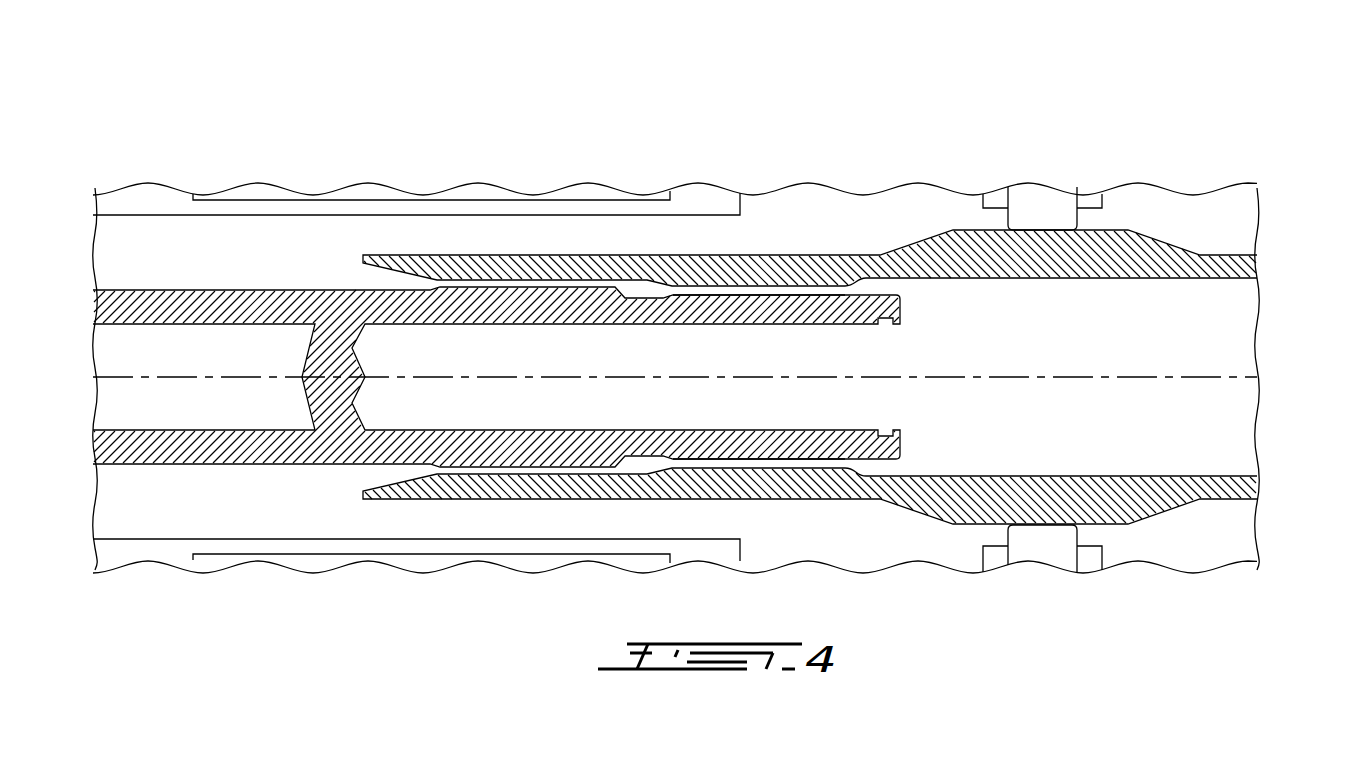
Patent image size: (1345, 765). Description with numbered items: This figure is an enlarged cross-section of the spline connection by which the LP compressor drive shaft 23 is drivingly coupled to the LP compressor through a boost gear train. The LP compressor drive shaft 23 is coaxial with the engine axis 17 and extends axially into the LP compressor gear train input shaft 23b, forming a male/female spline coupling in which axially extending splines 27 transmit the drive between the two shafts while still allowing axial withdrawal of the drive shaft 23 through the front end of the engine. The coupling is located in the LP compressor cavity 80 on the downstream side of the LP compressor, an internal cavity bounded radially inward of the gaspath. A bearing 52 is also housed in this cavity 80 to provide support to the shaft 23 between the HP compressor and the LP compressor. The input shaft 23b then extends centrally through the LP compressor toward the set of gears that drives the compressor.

The engine axis 17 is at (1200, 377).
The LP compressor drive shaft 23 is at (188, 303).
The LP compressor gear train input shaft 23b is at (1170, 260).
The axially extending splines 27 is at (788, 290).
The bearing 52 is at (1063, 213).
The LP compressor cavity 80 is at (1183, 217).